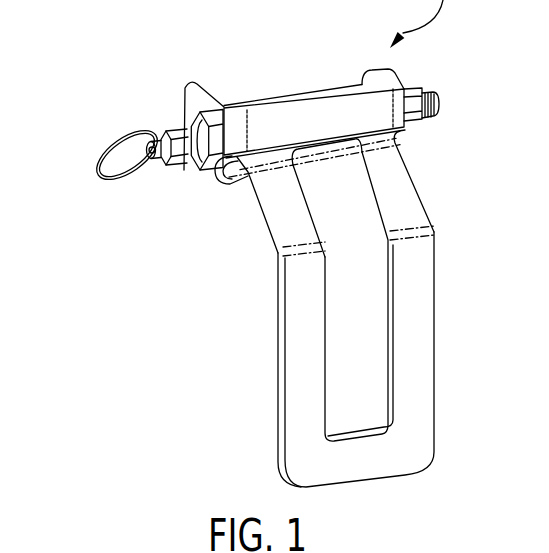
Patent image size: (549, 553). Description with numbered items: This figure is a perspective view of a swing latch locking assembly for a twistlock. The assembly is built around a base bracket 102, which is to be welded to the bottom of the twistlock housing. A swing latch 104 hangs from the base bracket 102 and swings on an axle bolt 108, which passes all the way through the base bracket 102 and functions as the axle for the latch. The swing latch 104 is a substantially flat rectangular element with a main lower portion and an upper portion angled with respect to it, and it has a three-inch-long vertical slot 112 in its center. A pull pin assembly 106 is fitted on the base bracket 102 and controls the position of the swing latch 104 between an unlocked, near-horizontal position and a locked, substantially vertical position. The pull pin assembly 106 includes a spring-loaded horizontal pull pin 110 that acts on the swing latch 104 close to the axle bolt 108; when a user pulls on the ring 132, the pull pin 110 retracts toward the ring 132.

The base bracket 102 is at (227, 88).
The swing latch 104 is at (353, 309).
The pull pin assembly 106 is at (96, 132).
The axle bolt 108 is at (201, 143).
The pull pin 110 is at (153, 158).
The vertical slot 112 is at (375, 403).
The ring 132 is at (97, 163).